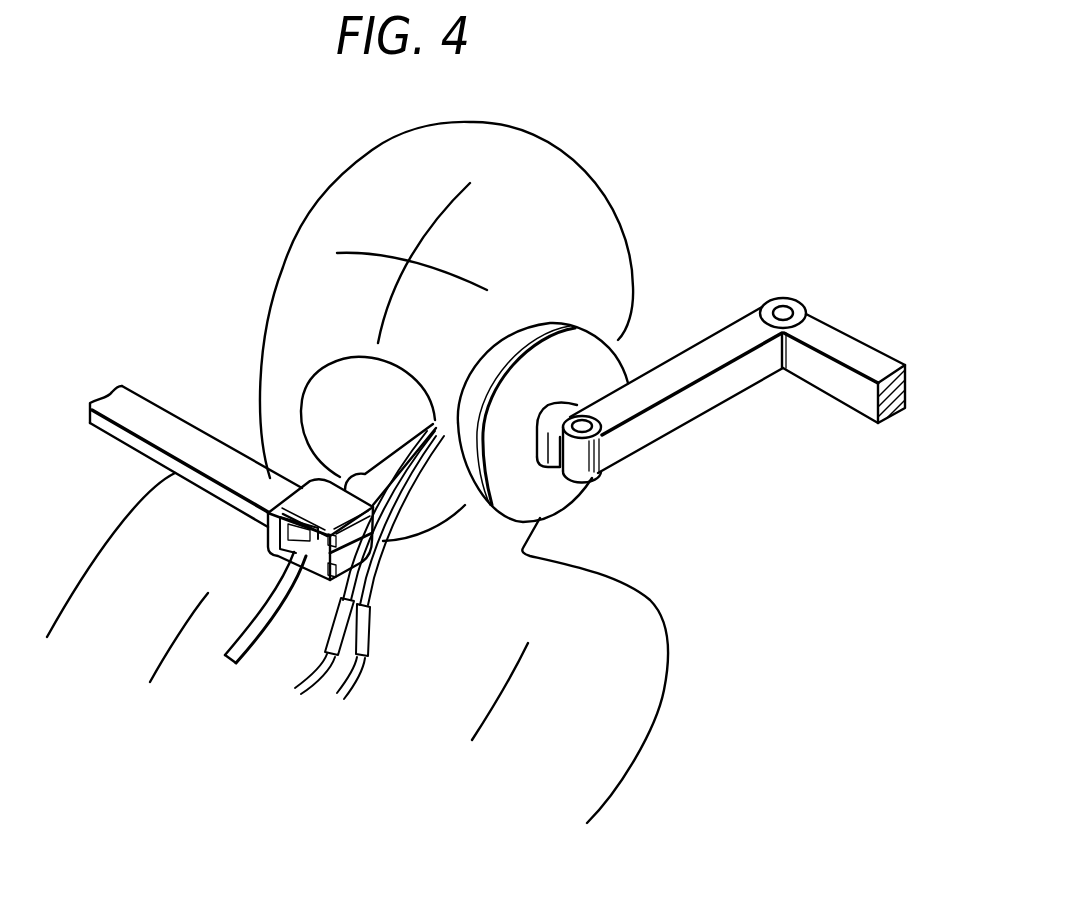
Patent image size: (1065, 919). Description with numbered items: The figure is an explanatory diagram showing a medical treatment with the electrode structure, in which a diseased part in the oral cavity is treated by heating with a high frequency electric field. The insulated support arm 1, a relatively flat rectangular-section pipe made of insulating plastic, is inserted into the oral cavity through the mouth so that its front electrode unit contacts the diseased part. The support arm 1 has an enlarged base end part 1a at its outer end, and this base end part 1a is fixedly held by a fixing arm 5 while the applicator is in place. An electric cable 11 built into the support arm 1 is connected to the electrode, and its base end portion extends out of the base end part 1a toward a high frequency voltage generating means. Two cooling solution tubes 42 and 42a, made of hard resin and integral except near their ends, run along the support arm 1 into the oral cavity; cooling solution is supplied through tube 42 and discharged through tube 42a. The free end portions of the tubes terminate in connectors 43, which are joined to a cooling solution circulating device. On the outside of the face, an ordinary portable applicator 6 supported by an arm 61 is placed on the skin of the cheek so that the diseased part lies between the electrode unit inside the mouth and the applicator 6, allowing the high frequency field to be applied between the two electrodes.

The support arm 1 is at (380, 451).
The base end part 1a is at (292, 532).
The fixing arm 5 is at (163, 418).
The portable applicator 6 is at (615, 358).
The arm 61 is at (680, 423).
The electric cable 11 is at (265, 593).
The cooling solution tube 42 is at (384, 552).
The cooling solution tube 42a is at (358, 583).
The connector 43 is at (335, 634).